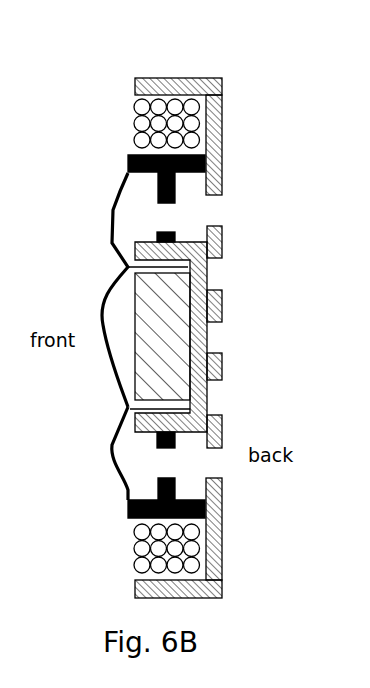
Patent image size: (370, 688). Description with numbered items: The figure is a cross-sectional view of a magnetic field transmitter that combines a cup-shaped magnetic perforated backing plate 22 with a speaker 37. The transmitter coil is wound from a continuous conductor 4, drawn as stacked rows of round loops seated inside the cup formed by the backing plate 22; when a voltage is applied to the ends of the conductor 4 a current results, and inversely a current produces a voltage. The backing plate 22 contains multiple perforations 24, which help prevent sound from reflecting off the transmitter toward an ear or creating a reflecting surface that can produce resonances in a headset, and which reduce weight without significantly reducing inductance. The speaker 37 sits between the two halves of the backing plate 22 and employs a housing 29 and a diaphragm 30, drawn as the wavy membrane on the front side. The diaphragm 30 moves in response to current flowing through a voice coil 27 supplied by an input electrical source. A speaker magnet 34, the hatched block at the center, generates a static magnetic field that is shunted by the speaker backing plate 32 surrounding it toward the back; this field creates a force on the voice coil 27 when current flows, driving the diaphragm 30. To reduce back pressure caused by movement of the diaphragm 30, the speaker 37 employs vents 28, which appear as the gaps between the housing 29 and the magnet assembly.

The continuous conductor 4 is at (133, 107).
The cup-shaped magnetic perforated backing plate 22 is at (175, 78).
The perforations 24 is at (220, 210).
The voice coil 27 is at (120, 428).
The vents 28 is at (158, 222).
The housing 29 is at (128, 508).
The diaphragm 30 is at (105, 316).
The speaker backing plate 32 is at (205, 340).
The speaker magnet 34 is at (180, 392).
The speaker 37 is at (92, 252).